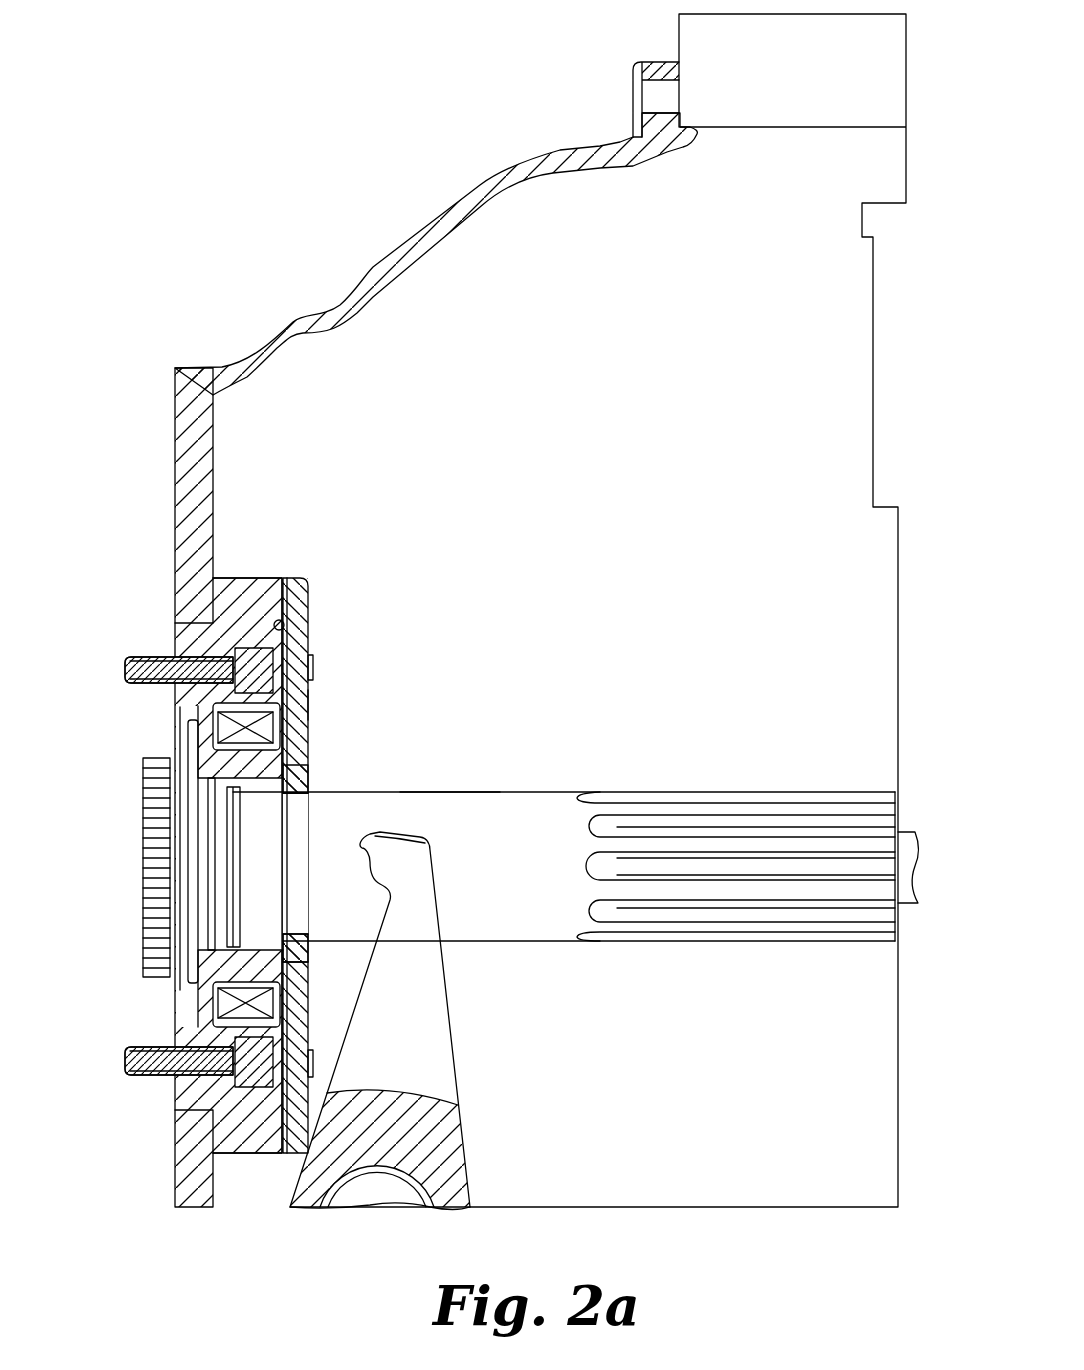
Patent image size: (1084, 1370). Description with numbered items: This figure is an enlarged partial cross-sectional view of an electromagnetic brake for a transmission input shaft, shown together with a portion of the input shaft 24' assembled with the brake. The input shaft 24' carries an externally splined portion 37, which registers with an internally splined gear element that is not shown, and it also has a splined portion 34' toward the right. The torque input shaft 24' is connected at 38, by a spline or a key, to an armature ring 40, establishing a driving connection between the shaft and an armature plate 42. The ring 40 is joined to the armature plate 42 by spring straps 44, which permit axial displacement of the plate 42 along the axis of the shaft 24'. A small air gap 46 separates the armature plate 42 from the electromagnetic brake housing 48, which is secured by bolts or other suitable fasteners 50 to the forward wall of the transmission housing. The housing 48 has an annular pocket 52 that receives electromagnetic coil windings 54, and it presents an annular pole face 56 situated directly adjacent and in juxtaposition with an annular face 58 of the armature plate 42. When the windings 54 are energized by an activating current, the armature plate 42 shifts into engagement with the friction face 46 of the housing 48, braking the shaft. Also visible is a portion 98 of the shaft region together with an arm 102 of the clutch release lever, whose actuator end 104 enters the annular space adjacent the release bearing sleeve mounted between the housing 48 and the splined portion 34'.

The input shaft 24' is at (576, 827).
The splined portion 34' is at (736, 827).
The externally splined portion 37 is at (157, 778).
The connection 38 is at (308, 795).
The armature ring 40 is at (312, 775).
The armature plate 42 is at (310, 633).
The spring straps 44 is at (310, 705).
The air gap 46 is at (287, 592).
The electromagnetic brake housing 48 is at (242, 590).
The fasteners 50 is at (143, 657).
The annular pocket 52 is at (215, 748).
The electromagnetic coil windings 54 is at (233, 1003).
The annular pole face 56 is at (290, 1000).
The annular face 58 is at (284, 621).
The shaft section 98 is at (453, 792).
The arm 102 is at (408, 1010).
The actuator end 104 is at (430, 848).